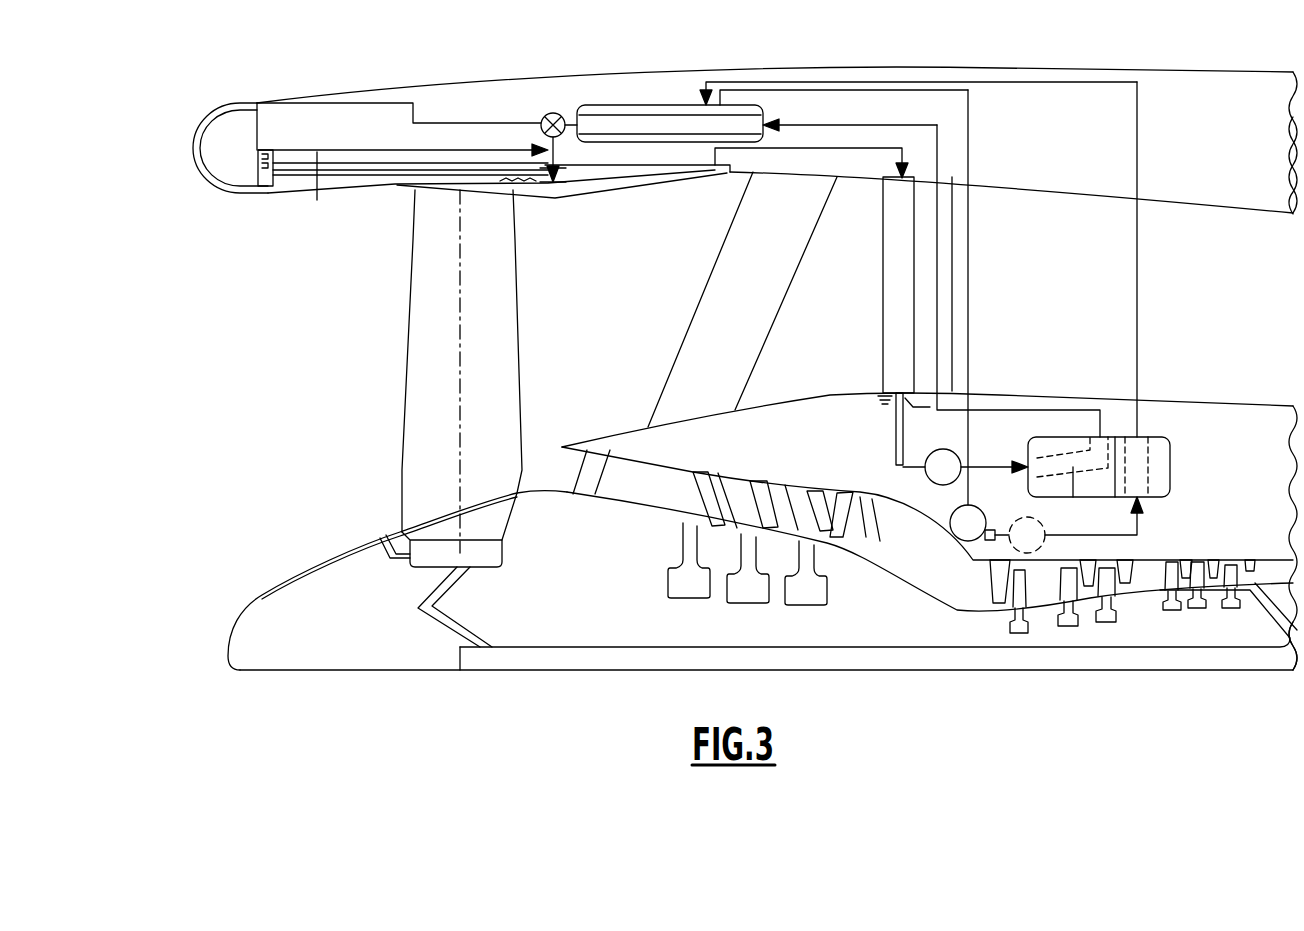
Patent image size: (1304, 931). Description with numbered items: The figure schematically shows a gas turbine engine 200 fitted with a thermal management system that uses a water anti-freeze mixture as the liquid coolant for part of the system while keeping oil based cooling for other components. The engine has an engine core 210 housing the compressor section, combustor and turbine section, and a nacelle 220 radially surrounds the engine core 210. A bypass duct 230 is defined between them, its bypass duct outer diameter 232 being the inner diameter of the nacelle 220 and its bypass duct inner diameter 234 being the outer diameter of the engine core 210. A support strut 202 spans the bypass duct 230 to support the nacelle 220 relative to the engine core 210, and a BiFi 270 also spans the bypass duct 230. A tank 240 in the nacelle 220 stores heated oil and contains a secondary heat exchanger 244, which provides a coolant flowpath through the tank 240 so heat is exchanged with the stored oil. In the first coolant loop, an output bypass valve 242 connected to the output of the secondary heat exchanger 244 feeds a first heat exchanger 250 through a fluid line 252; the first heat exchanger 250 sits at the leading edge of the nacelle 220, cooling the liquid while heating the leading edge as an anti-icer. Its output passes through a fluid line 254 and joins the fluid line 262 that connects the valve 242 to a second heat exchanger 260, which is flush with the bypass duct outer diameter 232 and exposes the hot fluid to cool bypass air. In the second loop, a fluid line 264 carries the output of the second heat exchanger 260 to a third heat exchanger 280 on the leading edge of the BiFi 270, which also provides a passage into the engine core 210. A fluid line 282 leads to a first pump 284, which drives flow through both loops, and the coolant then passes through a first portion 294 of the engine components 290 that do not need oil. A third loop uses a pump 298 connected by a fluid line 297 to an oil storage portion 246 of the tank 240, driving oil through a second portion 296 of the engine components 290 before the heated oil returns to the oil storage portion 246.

The gas turbine engine 200 is at (150, 300).
The support strut 202 is at (688, 378).
The engine core 210 is at (603, 632).
The nacelle 220 is at (1170, 88).
The bypass duct 230 is at (1053, 217).
The bypass duct outer diameter 232 is at (1160, 198).
The bypass duct inner diameter 234 is at (1170, 392).
The tank 240 is at (637, 105).
The output bypass valve 242 is at (553, 112).
The secondary heat exchanger 244 is at (672, 114).
The oil storage portion 246 is at (693, 103).
The first heat exchanger 250 is at (200, 118).
The fluid line 252 is at (380, 104).
The fluid line 254 is at (317, 200).
The second heat exchanger 260 is at (547, 207).
The fluid line 262 is at (543, 152).
The fluid line 264 is at (875, 153).
The BiFi 270 is at (923, 231).
The third heat exchanger 280 is at (895, 339).
The fluid line 282 is at (896, 435).
The first pump 284 is at (937, 480).
The engine components 290 is at (1172, 468).
The first portion of the engine components 294 is at (1073, 497).
The second portion of the engine components 296 is at (1150, 450).
The fluid line 297 is at (968, 285).
The pump 298 is at (968, 547).